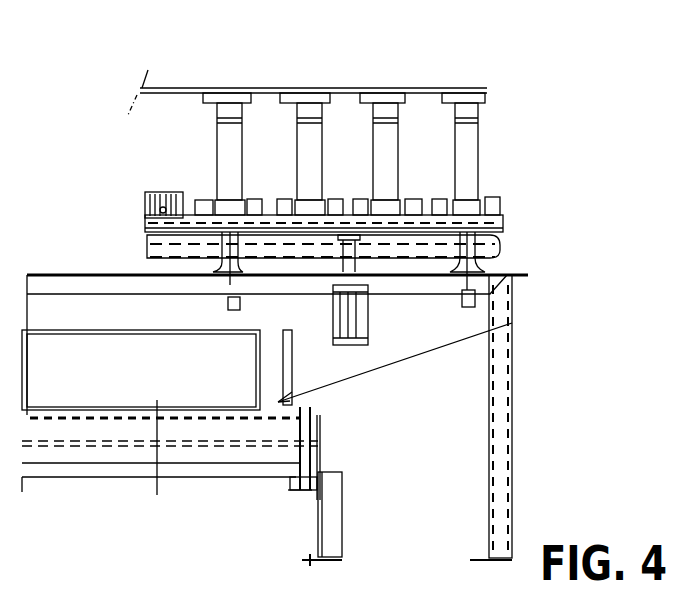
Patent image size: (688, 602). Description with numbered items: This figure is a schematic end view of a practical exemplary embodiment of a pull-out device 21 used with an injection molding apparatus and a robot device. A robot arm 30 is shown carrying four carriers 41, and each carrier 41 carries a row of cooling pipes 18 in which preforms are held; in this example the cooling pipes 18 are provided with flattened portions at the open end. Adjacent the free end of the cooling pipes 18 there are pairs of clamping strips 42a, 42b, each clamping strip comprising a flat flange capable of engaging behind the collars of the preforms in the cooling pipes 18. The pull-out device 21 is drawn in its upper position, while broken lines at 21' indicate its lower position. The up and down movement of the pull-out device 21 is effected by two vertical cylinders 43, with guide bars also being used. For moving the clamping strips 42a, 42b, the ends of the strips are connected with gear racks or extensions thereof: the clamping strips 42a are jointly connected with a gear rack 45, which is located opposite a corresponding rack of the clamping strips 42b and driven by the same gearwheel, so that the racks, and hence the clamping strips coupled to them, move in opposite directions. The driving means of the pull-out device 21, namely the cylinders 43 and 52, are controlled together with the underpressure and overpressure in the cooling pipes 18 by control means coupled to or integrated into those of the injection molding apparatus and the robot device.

The cooling pipes 18 is at (463, 143).
The pull-out device 21 is at (374, 196).
The lower position of pull-out device 21' is at (381, 251).
The robot arm 30 is at (170, 60).
The carriers 41 is at (283, 95).
The clamping strips 42a is at (362, 200).
The clamping strips 42b is at (193, 207).
The vertical cylinders 43 is at (368, 343).
The gear rack 45 is at (222, 248).
The cylinder 52 is at (145, 207).